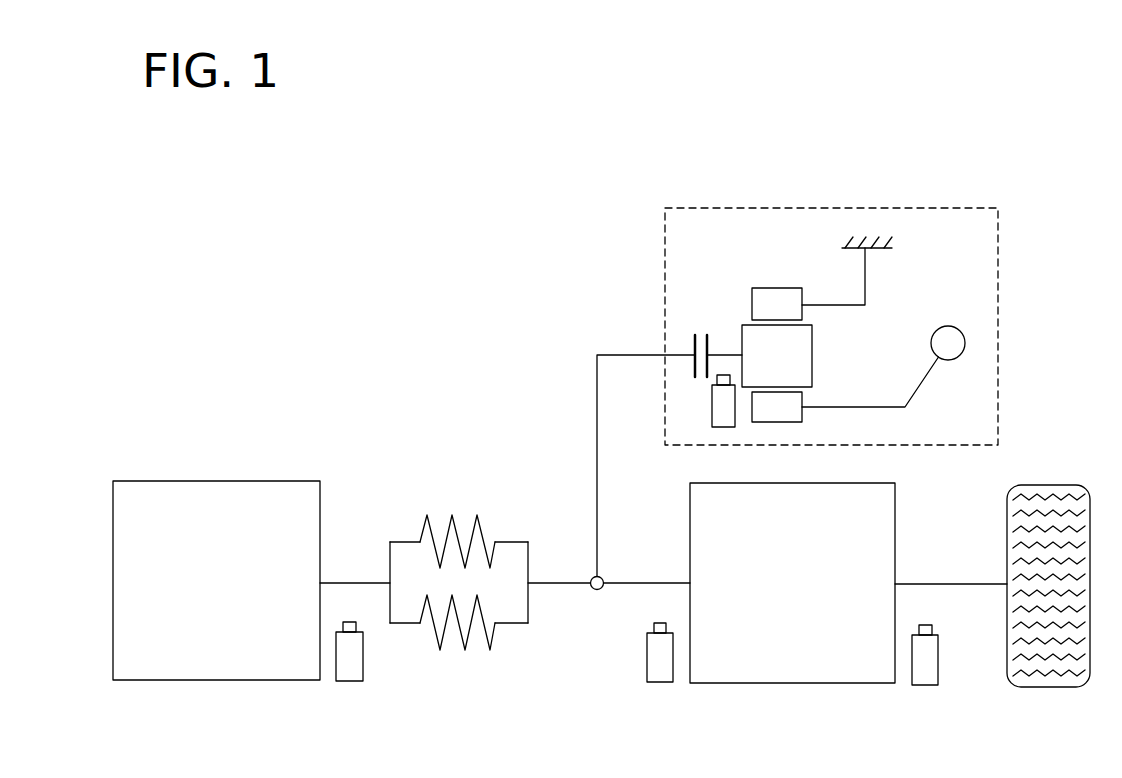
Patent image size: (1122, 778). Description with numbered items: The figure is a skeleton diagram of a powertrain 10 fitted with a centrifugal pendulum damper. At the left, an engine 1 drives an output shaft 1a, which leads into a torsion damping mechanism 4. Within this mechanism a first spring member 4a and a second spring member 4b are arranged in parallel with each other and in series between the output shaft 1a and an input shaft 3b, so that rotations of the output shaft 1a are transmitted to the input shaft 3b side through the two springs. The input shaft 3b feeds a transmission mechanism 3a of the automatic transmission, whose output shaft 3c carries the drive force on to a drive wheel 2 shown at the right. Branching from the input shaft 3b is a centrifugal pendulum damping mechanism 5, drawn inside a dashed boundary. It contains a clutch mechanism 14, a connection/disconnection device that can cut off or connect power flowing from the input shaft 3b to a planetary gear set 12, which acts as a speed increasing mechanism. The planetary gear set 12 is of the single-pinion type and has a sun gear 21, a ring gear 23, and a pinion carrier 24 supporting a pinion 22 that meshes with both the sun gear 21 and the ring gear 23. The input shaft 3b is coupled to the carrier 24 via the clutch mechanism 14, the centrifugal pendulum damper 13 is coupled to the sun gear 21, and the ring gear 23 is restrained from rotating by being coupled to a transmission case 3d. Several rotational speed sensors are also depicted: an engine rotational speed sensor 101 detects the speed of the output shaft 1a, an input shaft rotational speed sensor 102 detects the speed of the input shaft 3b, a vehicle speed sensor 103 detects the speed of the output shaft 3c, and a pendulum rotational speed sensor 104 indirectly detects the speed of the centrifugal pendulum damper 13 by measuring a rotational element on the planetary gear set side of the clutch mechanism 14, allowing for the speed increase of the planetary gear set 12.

The engine 1 is at (265, 481).
The output shaft 1a is at (342, 582).
The drive wheel 2 is at (1068, 486).
The transmission mechanism 3a is at (896, 484).
The input shaft 3b is at (643, 582).
The output shaft 3c is at (946, 582).
The transmission case 3d is at (874, 236).
The torsion damping mechanism 4 is at (469, 584).
The first spring member 4a is at (428, 514).
The second spring member 4b is at (440, 652).
The centrifugal pendulum damping mechanism 5 is at (963, 208).
The powertrain 10 is at (340, 320).
The planetary gear set 12 is at (801, 330).
The centrifugal pendulum damper 13 is at (927, 380).
The clutch mechanism 14 is at (700, 333).
The sun gear 21 is at (803, 416).
The pinion 22 is at (813, 353).
The ring gear 23 is at (803, 297).
The pinion carrier 24 is at (721, 352).
The engine rotational speed sensor 101 is at (352, 683).
The input shaft rotational speed sensor 102 is at (663, 683).
The vehicle speed sensor 103 is at (930, 686).
The pendulum rotational speed sensor 104 is at (735, 427).